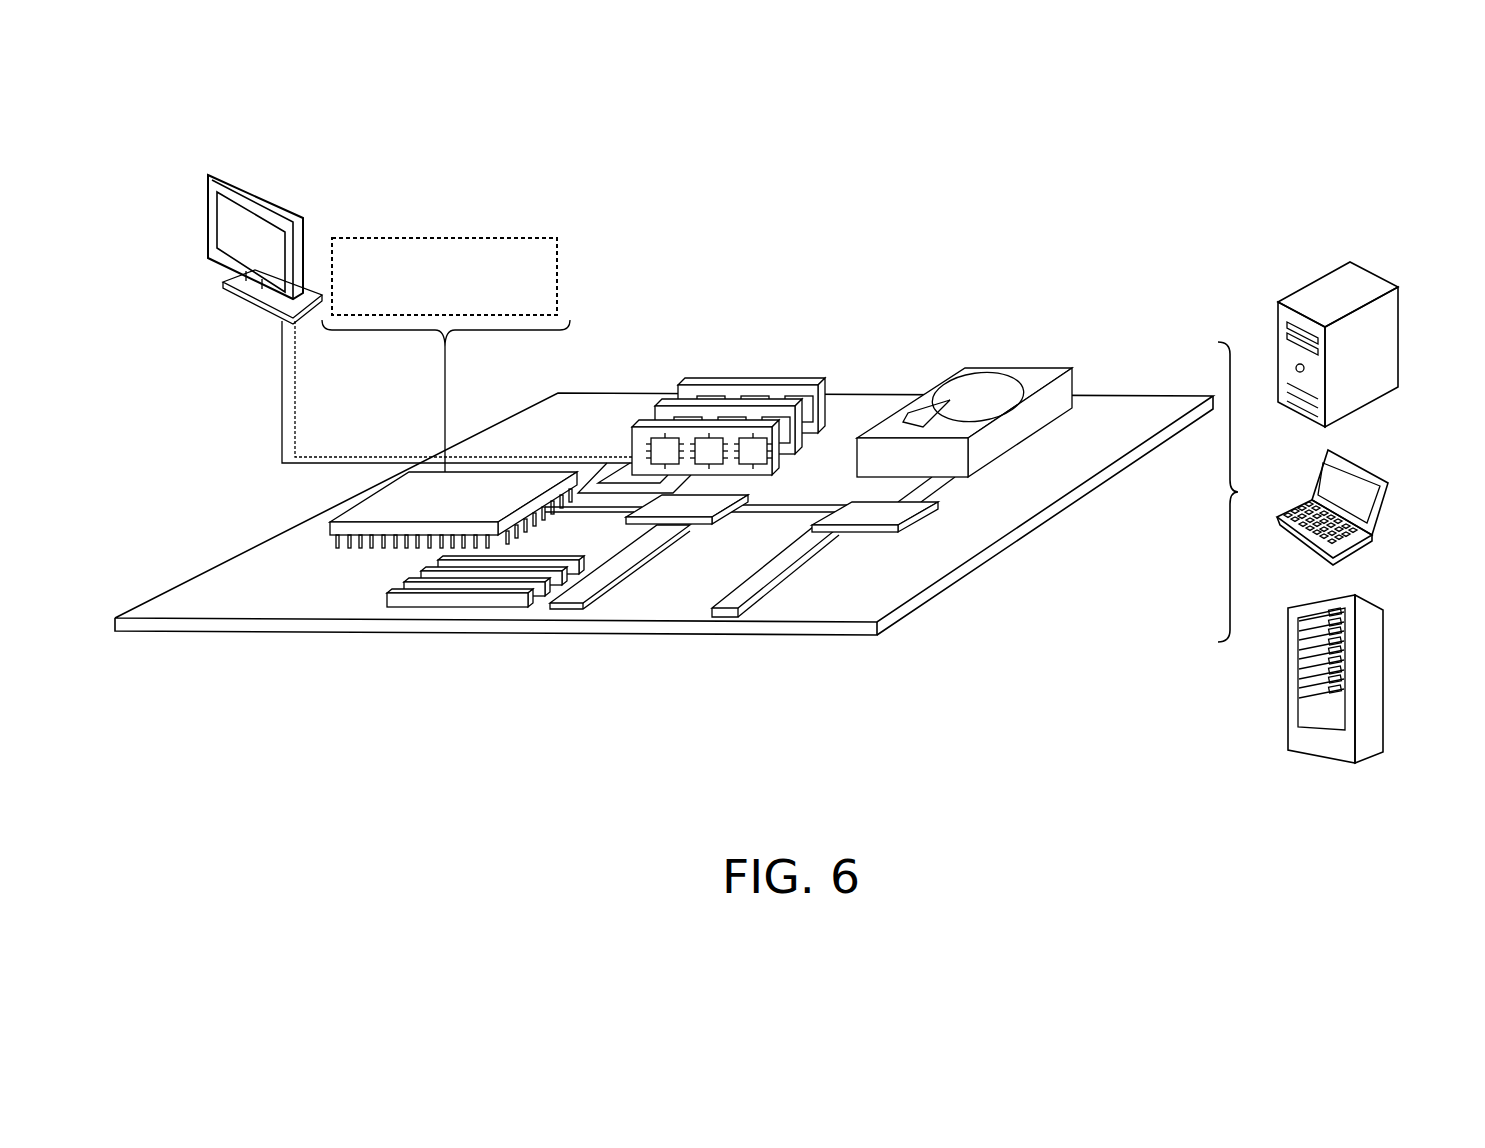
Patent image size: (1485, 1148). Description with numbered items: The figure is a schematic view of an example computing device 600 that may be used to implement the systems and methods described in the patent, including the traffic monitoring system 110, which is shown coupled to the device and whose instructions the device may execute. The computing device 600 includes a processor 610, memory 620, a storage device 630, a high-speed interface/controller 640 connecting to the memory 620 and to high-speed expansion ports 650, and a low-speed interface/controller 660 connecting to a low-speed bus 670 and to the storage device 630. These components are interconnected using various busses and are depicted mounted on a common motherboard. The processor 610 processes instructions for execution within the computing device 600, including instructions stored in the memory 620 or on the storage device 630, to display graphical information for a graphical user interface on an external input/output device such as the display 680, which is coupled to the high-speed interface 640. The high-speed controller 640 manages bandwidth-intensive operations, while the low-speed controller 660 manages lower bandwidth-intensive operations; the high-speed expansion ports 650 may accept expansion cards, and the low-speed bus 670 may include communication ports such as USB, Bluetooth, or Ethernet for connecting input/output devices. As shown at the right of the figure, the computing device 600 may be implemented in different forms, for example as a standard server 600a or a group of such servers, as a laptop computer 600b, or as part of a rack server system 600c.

The computing device 600 is at (1038, 142).
The processor 610 is at (328, 525).
The memory 620 is at (751, 388).
The storage device 630 is at (1016, 368).
The high-speed interface/controller 640 is at (700, 526).
The high-speed expansion ports 650 is at (386, 596).
The low-speed interface/controller 660 is at (866, 508).
The low-speed bus 670 is at (737, 617).
The display 680 is at (208, 230).
The traffic monitoring system 110 is at (446, 364).
The standard server 600a is at (1309, 283).
The laptop computer 600b is at (1368, 479).
The rack server system 600c is at (1376, 664).